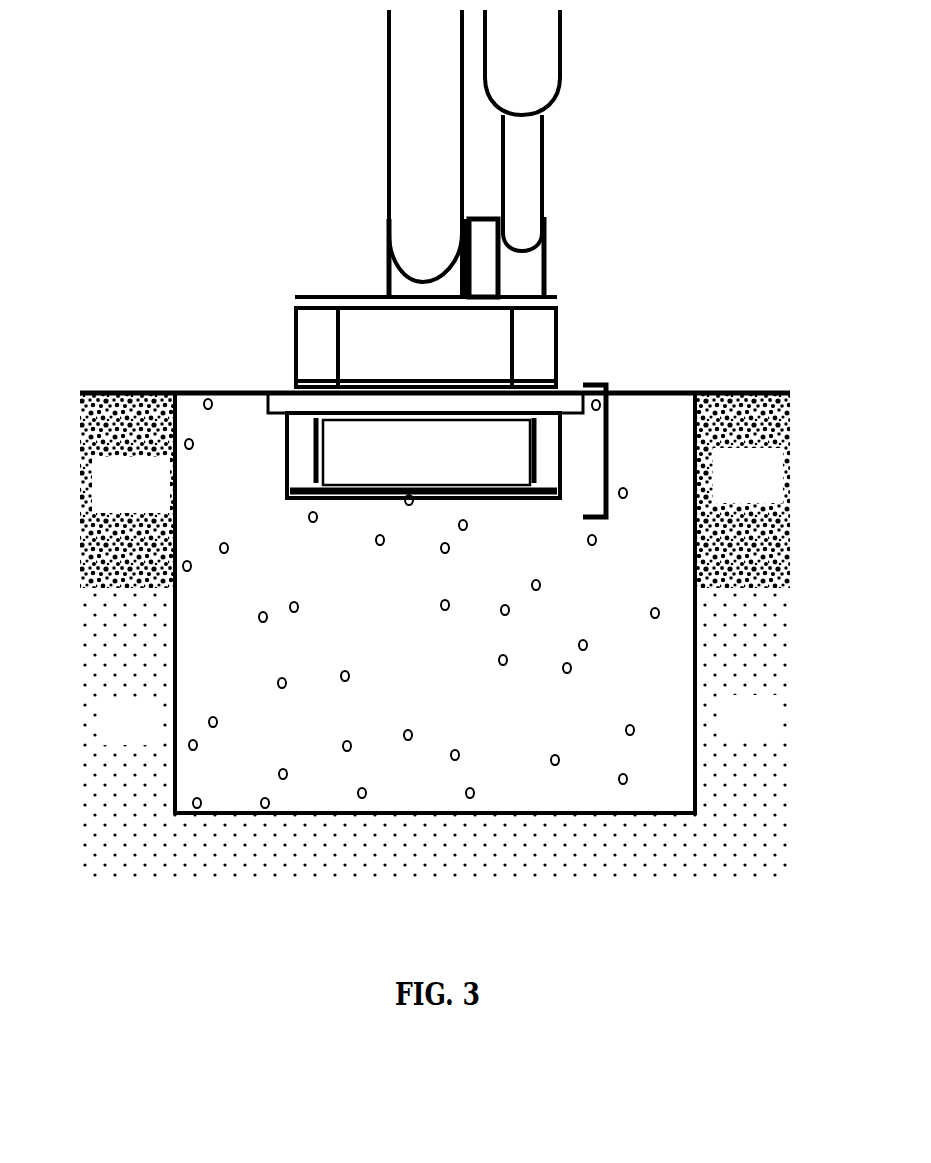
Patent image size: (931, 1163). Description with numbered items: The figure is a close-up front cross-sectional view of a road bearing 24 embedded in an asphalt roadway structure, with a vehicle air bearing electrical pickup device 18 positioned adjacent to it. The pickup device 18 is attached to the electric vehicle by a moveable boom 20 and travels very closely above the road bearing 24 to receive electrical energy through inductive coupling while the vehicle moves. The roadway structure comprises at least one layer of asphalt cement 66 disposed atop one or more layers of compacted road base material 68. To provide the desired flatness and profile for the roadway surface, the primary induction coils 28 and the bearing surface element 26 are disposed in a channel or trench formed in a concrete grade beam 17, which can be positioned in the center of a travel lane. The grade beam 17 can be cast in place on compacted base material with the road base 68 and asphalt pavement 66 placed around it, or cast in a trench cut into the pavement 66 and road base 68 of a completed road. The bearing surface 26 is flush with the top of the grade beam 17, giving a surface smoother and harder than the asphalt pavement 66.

The concrete grade beam 17 is at (456, 654).
The vehicle air bearing electrical pickup device 18 is at (382, 343).
The moveable boom 20 is at (408, 142).
The road bearing 24 is at (610, 448).
The road bearing surface element 26 is at (550, 402).
The primary induction coils 28 is at (367, 443).
The asphalt cement 66 is at (148, 502).
The compacted road base material 68 is at (148, 735).